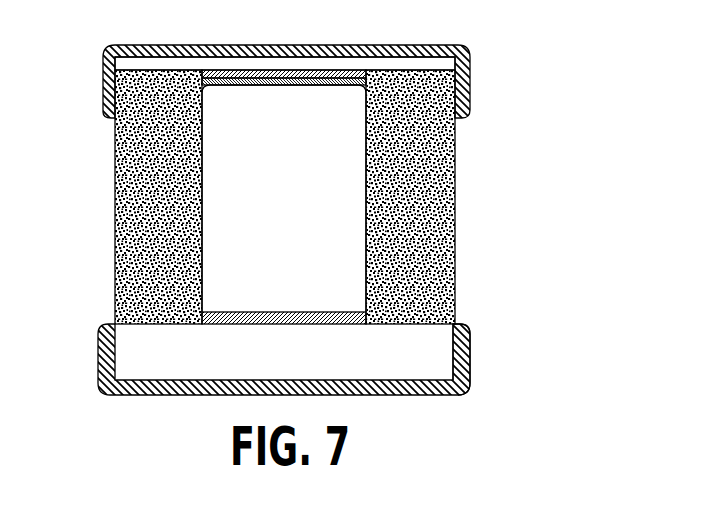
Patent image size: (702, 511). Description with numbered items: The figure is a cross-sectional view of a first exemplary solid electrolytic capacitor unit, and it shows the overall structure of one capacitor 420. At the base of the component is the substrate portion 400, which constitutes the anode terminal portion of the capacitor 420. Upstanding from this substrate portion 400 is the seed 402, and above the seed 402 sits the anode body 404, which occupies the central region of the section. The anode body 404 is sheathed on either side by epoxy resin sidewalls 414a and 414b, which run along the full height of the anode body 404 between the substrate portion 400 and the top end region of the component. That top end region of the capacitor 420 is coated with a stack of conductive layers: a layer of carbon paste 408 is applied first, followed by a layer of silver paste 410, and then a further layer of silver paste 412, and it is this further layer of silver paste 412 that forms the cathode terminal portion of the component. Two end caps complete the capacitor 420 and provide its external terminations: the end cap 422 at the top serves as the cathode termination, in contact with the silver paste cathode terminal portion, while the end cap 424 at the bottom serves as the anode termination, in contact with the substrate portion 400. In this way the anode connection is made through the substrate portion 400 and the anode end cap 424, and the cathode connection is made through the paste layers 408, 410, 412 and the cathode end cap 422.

The substrate portion 400 is at (168, 373).
The seed 402 is at (287, 312).
The anode body 404 is at (302, 202).
The layer of carbon paste 408 is at (255, 79).
The layer of silver paste 410 is at (300, 79).
The further layer of silver paste 412 is at (285, 40).
The epoxy resin sidewall 414a is at (121, 217).
The epoxy resin sidewall 414b is at (454, 210).
The capacitor 420 is at (303, 224).
The end cap 422 is at (468, 90).
The end cap 424 is at (468, 355).